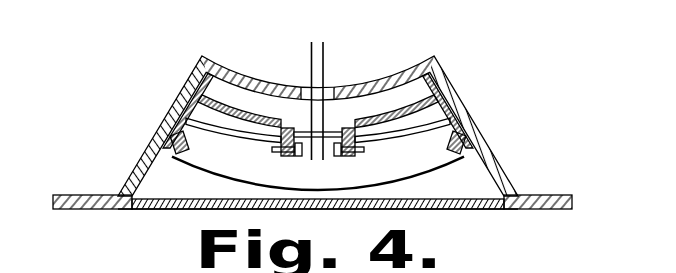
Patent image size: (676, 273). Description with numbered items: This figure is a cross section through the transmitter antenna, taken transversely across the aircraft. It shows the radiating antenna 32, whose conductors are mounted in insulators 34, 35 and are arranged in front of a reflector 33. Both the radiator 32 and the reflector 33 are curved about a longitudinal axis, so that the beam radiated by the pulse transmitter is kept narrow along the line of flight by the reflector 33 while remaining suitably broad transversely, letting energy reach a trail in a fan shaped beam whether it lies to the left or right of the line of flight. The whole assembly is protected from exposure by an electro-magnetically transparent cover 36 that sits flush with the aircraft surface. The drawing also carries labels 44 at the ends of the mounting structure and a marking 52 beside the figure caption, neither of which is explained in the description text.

The radiating antenna 32 is at (238, 134).
The reflector 33 is at (373, 124).
The insulator 34 is at (343, 157).
The insulator 35 is at (180, 147).
The electro-magnetically transparent cover 36 is at (188, 197).
The flanges 44 is at (64, 196).
The section designation 52 is at (160, 252).